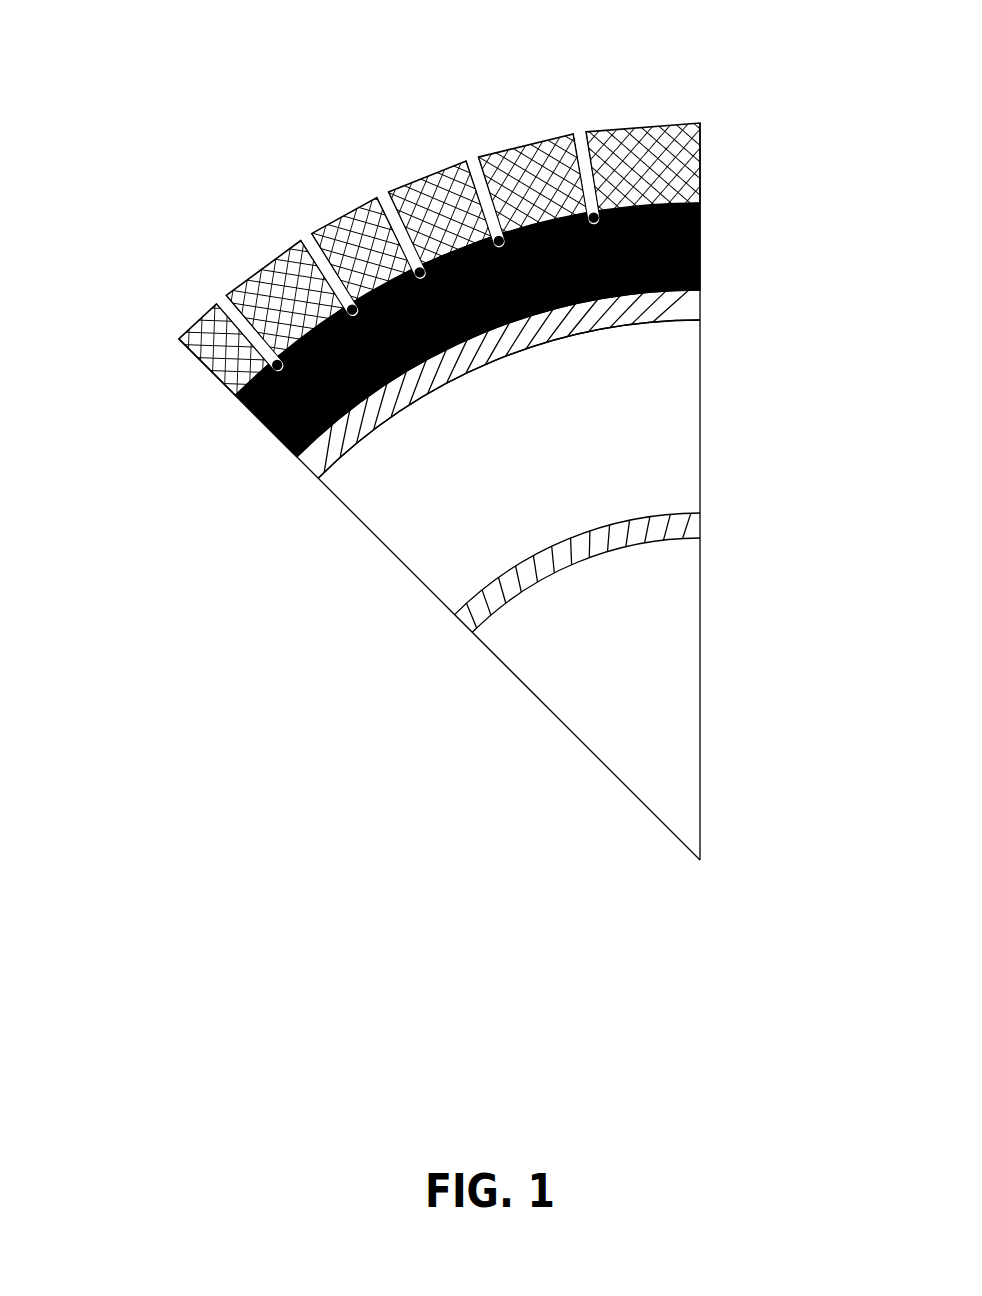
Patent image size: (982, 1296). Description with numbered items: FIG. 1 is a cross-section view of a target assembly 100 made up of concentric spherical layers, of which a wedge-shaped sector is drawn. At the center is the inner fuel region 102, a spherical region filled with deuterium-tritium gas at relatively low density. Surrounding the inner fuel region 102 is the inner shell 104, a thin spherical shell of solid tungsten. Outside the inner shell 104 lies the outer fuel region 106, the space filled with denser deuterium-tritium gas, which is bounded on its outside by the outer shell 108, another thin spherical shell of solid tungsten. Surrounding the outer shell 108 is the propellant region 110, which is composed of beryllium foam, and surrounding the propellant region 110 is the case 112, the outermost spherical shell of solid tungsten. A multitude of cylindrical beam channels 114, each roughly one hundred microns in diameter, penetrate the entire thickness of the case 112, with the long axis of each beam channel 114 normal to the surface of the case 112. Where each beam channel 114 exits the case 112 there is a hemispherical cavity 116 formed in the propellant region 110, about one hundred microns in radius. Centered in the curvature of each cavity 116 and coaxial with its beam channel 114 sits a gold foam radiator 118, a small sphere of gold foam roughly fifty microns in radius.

The target assembly 100 is at (255, 800).
The inner fuel region 102 is at (673, 762).
The inner shell 104 is at (680, 532).
The outer fuel region 106 is at (387, 532).
The outer shell 108 is at (700, 302).
The propellant region 110 is at (250, 415).
The case 112 is at (702, 157).
The beam channels 114 is at (467, 138).
The hemispherical cavity 116 is at (592, 222).
The gold foam radiator 118 is at (353, 313).